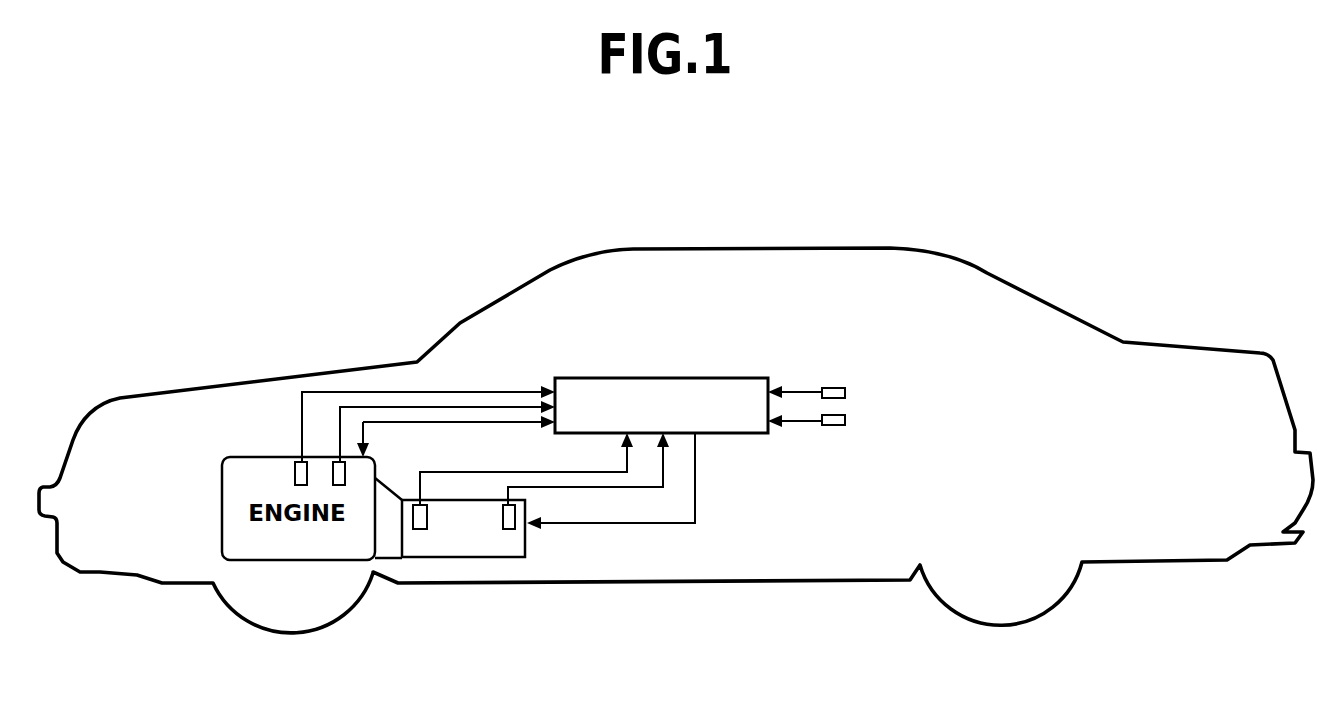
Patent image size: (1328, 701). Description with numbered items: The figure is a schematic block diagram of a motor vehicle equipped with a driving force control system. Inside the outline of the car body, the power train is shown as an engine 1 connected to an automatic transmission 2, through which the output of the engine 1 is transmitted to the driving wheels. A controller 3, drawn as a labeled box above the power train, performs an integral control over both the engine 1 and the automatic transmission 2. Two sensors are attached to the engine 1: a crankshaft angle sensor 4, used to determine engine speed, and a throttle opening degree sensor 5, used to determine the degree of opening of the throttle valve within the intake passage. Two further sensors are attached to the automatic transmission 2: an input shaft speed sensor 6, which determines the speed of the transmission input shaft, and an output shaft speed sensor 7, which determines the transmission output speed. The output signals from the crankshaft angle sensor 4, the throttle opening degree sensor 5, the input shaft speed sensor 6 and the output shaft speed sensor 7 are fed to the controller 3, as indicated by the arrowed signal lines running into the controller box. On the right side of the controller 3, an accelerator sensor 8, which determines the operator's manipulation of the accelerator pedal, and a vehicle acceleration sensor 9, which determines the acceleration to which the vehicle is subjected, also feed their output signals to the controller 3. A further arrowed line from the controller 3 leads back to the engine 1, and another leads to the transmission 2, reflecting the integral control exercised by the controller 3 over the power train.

The engine 1 is at (260, 562).
The automatic transmission 2 is at (462, 557).
The controller 3 is at (705, 377).
The crankshaft angle sensor 4 is at (293, 473).
The throttle opening degree sensor 5 is at (332, 472).
The input shaft speed sensor 6 is at (417, 542).
The output shaft speed sensor 7 is at (508, 529).
The accelerator sensor 8 is at (830, 427).
The vehicle acceleration sensor 9 is at (830, 387).